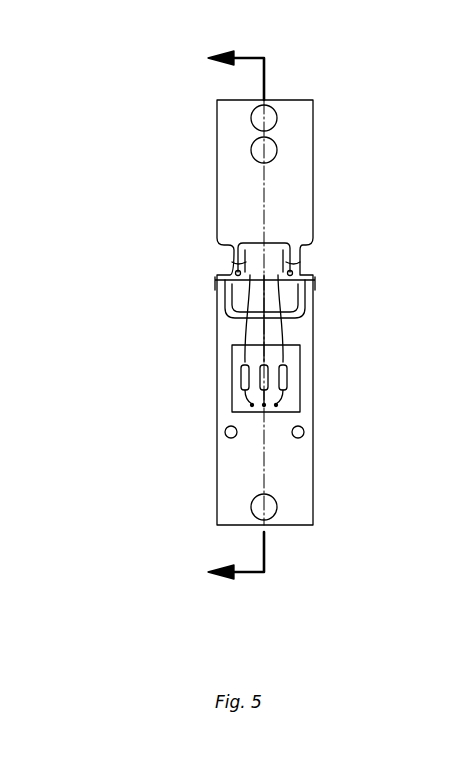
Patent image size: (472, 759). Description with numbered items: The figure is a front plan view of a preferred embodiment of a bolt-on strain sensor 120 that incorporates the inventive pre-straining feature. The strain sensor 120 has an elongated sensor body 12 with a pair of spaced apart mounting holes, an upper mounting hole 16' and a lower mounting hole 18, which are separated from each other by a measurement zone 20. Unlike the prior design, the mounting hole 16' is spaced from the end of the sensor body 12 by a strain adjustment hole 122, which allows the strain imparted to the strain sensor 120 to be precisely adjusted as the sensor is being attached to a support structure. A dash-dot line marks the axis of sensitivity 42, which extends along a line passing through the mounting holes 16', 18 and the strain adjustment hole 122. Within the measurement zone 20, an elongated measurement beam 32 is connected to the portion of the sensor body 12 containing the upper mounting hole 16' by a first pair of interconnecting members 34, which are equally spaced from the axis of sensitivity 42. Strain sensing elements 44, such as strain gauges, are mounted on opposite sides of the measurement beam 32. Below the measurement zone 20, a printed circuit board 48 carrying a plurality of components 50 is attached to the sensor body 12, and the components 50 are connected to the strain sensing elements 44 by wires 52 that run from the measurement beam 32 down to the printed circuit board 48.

The strain sensor 120 is at (165, 78).
The measurement zone 20 is at (123, 383).
The sensor body 12 is at (303, 470).
The strain adjustment hole 122 is at (253, 128).
The mounting hole 16' is at (208, 160).
The mounting hole 18 is at (252, 495).
The axis of sensitivity 42 is at (268, 478).
The first pair of interconnecting members 34 is at (278, 256).
The measurement beam 32 is at (236, 260).
The strain sensing elements 44 is at (232, 270).
The wires 52 is at (246, 318).
The printed circuit board 48 is at (300, 405).
The components 50 is at (243, 378).